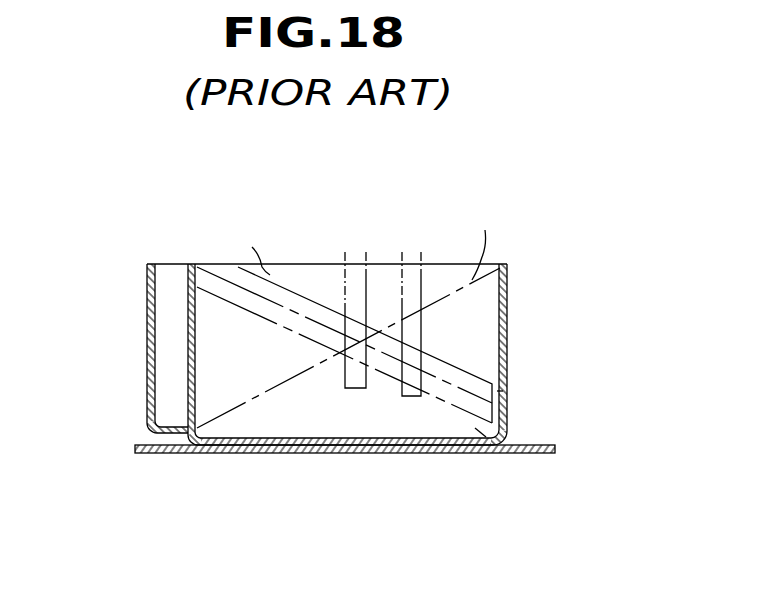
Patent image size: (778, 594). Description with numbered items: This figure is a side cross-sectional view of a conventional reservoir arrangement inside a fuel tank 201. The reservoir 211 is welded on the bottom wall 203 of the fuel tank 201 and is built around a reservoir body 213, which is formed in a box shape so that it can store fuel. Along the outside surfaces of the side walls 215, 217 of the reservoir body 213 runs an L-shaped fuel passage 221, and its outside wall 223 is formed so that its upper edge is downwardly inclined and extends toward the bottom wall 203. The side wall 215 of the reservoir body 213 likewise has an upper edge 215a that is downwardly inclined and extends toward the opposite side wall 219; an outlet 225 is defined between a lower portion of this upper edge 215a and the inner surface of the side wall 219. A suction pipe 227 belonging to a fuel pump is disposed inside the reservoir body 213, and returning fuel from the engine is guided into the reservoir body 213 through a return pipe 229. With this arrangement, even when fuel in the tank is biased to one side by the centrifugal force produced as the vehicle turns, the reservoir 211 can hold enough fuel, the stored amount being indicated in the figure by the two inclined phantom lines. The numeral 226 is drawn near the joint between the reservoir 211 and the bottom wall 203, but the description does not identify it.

The fuel tank 201 is at (628, 366).
The bottom wall 203 is at (532, 455).
The reservoir 211 is at (514, 290).
The reservoir body 213 is at (332, 430).
The side wall 215 is at (217, 313).
The upper edge 215a is at (292, 287).
The side wall 217 is at (187, 395).
The side wall 219 is at (507, 331).
The fuel passage 221 is at (160, 304).
The outside wall 223 is at (152, 332).
The outlet 225 is at (503, 391).
The fillet 226 is at (478, 455).
The suction pipe 227 is at (366, 275).
The return pipe 229 is at (423, 277).